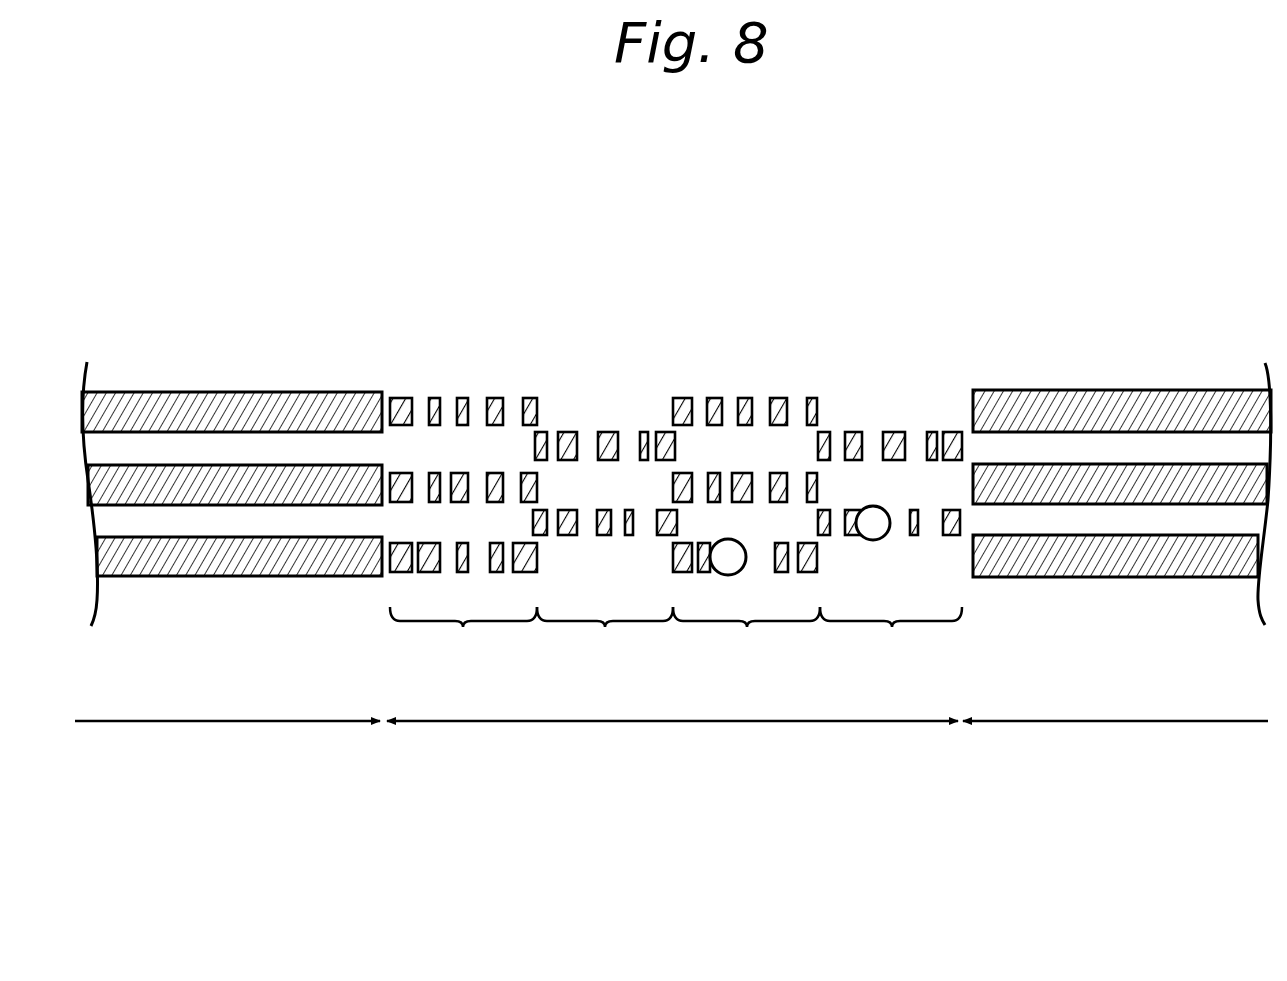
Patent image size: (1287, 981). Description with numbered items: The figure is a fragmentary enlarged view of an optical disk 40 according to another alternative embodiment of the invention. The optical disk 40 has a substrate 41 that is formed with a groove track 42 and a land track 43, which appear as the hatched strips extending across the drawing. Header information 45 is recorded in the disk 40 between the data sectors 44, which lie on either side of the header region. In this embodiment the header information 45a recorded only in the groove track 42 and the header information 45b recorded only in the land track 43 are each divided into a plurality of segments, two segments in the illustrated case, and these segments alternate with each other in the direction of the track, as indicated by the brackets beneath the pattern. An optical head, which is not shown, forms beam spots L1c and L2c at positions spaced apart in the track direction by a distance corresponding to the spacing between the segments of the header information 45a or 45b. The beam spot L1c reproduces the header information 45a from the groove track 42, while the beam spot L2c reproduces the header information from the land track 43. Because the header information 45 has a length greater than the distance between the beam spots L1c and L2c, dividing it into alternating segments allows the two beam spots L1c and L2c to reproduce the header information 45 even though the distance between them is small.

The optical disk 40 is at (1101, 260).
The substrate 41 is at (676, 411).
The groove track 42 is at (676, 438).
The land track 43 is at (183, 445).
The data sectors 44 is at (222, 722).
The header information 45 is at (695, 732).
The header information recorded in the groove track 45a is at (605, 640).
The header information recorded in the land track 45b is at (749, 640).
The beam spot L1c is at (736, 541).
The beam spot L2c is at (880, 508).